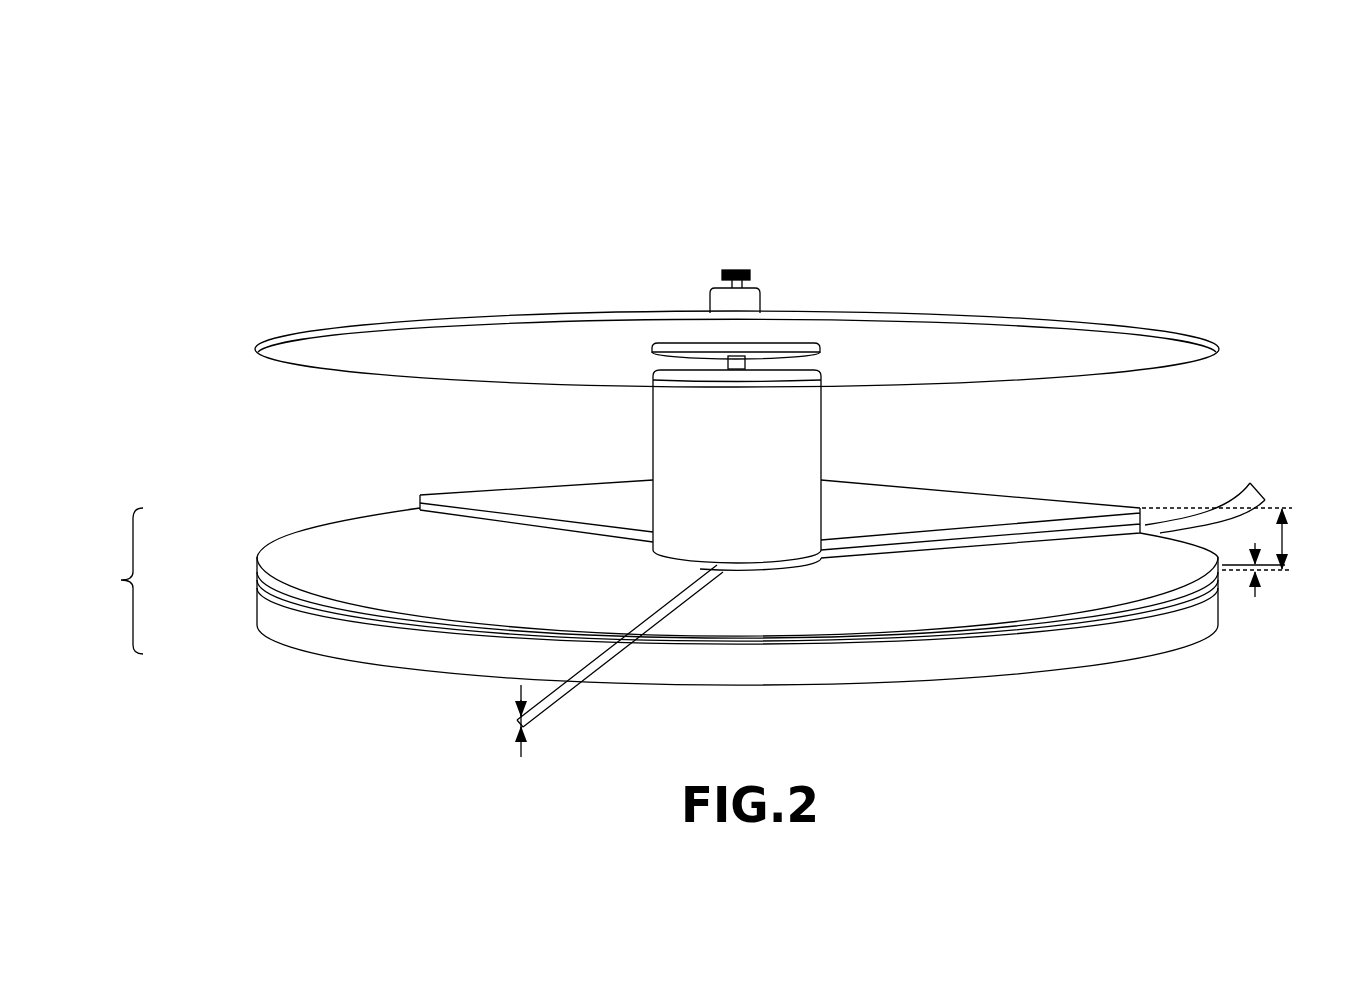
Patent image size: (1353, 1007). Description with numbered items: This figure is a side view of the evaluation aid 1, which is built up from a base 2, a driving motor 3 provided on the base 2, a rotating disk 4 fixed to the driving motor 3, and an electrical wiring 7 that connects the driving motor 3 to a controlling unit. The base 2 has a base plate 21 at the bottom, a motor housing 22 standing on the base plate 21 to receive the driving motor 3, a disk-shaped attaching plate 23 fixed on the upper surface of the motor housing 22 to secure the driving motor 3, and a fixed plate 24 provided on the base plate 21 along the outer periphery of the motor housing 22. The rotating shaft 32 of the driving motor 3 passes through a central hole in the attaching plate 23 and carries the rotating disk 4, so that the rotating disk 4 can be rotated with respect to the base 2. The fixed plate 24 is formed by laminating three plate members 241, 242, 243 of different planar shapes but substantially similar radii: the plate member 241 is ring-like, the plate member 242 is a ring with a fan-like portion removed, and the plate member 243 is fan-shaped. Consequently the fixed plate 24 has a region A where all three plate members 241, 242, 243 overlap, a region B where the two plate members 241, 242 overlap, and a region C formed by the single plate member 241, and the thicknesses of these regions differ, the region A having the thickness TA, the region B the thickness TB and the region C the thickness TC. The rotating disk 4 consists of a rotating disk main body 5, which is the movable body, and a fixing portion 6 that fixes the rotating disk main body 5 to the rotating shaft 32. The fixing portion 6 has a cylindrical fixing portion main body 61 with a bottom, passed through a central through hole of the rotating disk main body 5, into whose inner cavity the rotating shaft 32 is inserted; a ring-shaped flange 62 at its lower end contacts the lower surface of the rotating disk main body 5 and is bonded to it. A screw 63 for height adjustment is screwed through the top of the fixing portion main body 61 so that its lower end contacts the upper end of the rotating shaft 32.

The evaluation aid 1 is at (1078, 128).
The base 2 is at (1057, 679).
The base plate 21 is at (1160, 627).
The motor housing 22 is at (790, 462).
The attaching plate 23 is at (652, 383).
The fixed plate 24 is at (115, 581).
The plate member 241 is at (257, 592).
The plate member 242 is at (257, 578).
The plate member 243 is at (418, 496).
The driving motor 3 is at (768, 427).
The rotating shaft 32 is at (762, 347).
The rotating disk 4 is at (1121, 297).
The rotating disk main body 5 is at (991, 296).
The fixing portion 6 is at (700, 258).
The fixing portion main body 61 is at (748, 300).
The flange 62 is at (819, 355).
The screw 63 is at (736, 270).
The electrical wiring 7 is at (1238, 485).
The region A is at (1030, 483).
The region B is at (490, 580).
The region C is at (909, 591).
The thickness of region A TA is at (1285, 540).
The thickness of region B TB is at (519, 722).
The thickness of region C TC is at (1262, 575).